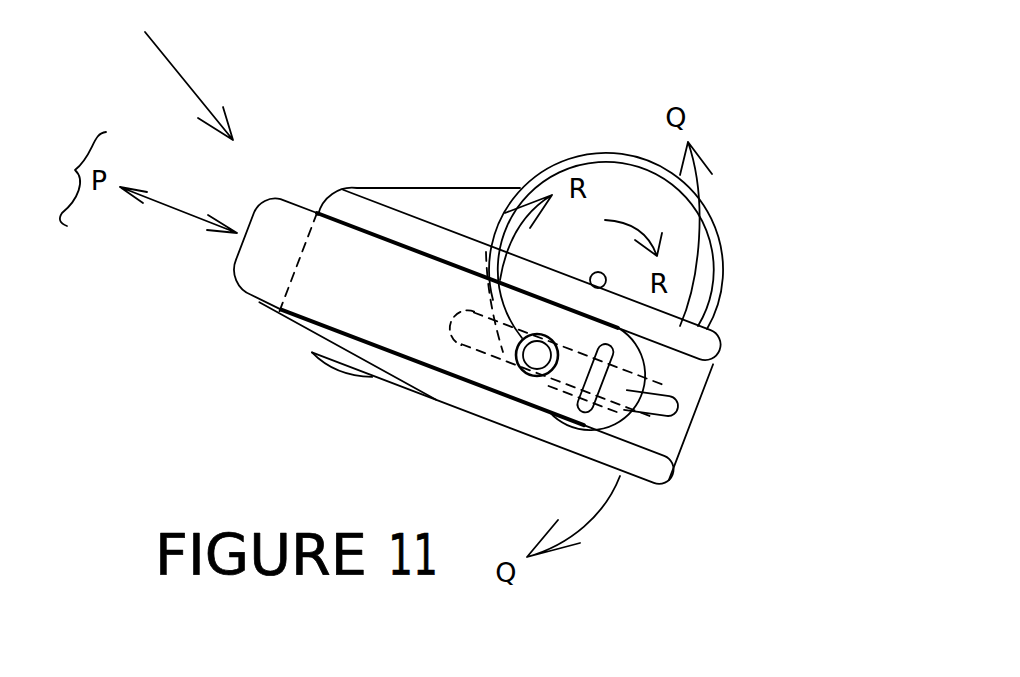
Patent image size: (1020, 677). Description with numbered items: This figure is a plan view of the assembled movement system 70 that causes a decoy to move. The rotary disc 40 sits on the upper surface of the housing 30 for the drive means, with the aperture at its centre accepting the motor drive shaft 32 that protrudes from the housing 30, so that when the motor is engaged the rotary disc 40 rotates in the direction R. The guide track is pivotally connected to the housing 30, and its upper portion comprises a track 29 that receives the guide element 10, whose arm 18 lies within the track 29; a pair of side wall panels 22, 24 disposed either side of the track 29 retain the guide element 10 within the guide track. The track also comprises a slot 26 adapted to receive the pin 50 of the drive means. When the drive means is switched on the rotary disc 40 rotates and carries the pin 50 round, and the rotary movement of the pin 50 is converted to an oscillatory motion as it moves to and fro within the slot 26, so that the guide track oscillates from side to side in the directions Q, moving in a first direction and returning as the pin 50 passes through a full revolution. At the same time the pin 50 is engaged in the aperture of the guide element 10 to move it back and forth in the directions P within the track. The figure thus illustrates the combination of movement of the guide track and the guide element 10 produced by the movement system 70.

The guide element 10 is at (73, 179).
The arm 18 is at (335, 293).
The side wall panel 22 is at (303, 333).
The side wall panel 24 is at (350, 210).
The slot 26 is at (668, 418).
The track 29 is at (696, 385).
The housing 30 is at (457, 207).
The drive shaft 32 is at (606, 273).
The rotary disc 40 is at (622, 182).
The pin 50 is at (525, 371).
The movement system 70 is at (171, 70).